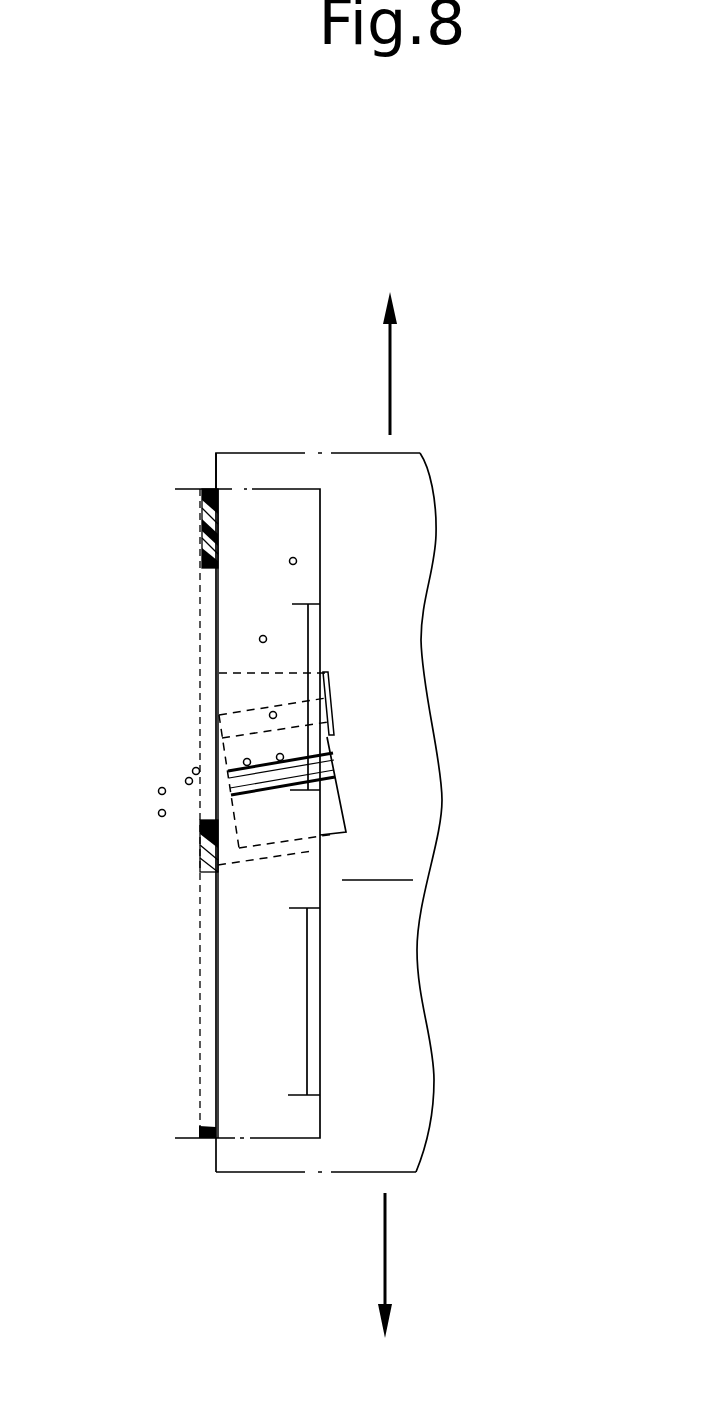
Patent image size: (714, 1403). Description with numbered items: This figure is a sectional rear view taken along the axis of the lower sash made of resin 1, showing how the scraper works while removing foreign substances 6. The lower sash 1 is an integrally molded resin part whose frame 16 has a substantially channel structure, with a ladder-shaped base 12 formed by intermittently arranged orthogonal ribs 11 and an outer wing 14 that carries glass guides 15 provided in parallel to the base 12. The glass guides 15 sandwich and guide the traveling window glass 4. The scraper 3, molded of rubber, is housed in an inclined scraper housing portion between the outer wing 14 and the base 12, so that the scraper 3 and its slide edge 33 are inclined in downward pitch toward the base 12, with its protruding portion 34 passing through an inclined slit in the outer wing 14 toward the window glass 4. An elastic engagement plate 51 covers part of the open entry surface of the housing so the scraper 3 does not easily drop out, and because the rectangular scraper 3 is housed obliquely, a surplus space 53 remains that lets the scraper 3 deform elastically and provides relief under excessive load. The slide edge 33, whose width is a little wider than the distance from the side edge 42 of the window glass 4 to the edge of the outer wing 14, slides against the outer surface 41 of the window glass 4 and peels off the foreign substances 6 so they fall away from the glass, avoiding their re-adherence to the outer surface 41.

The lower sash made of resin 1 is at (338, 544).
The scraper 3 is at (345, 740).
The window glass 4 is at (392, 474).
The foreign substances 6 is at (262, 714).
The orthogonal rib 11 is at (214, 540).
The base 12 is at (207, 983).
The outer wing 14 is at (277, 967).
The glass guide 15 is at (312, 660).
The frame 16 is at (196, 1065).
The slide edge 33 is at (332, 760).
The protruding portion 34 is at (332, 788).
The outer surface 41 is at (377, 863).
The side edge 42 is at (217, 465).
The elastic engagement plate 51 is at (334, 696).
The surplus space 53 is at (205, 840).